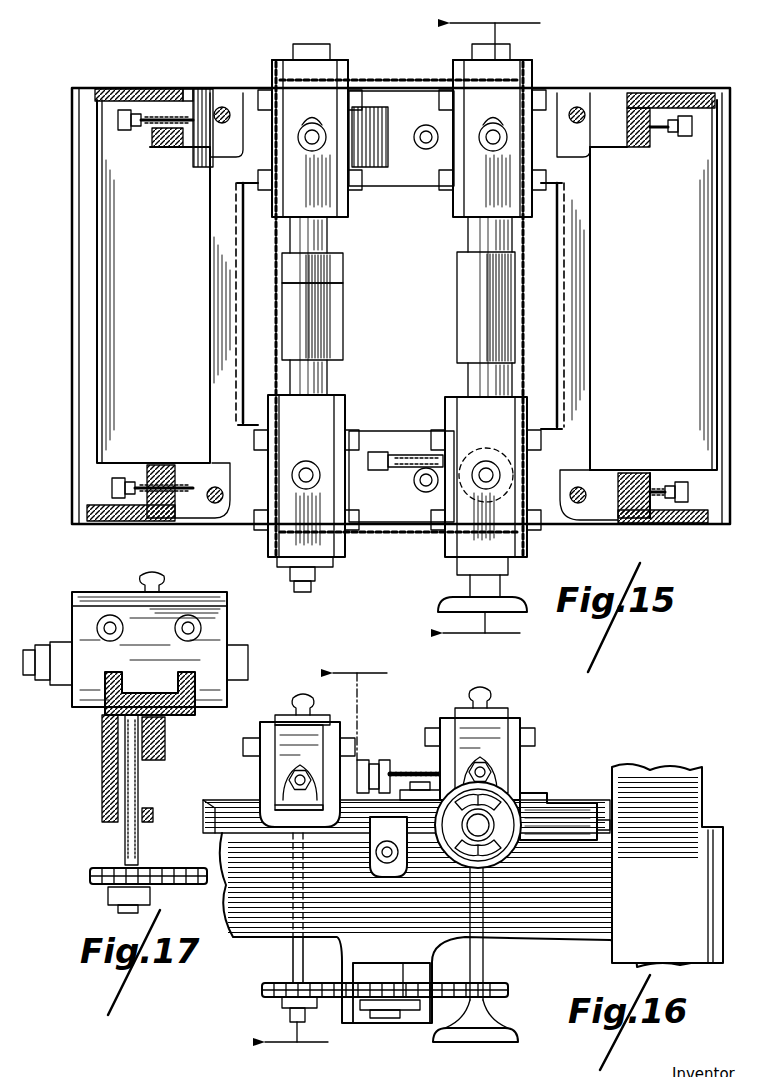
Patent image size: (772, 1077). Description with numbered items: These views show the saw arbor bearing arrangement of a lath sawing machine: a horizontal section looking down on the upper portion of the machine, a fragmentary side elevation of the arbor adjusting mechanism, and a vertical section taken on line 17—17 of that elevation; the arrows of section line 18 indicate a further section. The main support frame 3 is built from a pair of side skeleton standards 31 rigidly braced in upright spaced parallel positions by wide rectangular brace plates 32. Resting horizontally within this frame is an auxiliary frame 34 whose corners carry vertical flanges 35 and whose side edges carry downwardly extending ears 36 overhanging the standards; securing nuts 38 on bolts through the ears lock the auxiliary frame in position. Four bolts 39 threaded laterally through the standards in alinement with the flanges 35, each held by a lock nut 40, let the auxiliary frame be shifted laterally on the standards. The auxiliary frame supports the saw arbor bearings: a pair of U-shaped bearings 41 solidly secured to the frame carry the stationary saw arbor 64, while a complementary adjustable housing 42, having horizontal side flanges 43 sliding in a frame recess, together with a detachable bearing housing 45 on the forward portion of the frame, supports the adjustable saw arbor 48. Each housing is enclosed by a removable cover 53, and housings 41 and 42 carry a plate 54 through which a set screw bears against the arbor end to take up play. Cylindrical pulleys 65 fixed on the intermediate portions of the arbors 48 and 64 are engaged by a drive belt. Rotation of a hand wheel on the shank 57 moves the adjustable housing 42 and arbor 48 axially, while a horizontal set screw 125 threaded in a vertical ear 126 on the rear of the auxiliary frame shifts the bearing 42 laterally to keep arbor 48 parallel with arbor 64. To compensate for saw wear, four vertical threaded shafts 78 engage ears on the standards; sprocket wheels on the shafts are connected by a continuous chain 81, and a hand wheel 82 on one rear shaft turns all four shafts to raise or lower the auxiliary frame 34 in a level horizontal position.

In FIG. 15, the frame 3 is at (636, 150).
In FIG. 16, the section line 17 is at (340, 869).
In FIG. 15, the section line 18 is at (504, 338).
In FIG. 17, the side skeleton standard 31 is at (100, 782).
In FIG. 16, the side skeleton standard 31 is at (580, 922).
In FIG. 15, the brace plate 32 is at (86, 302).
In FIG. 16, the brace plate 32 is at (707, 840).
In FIG. 15, the auxiliary frame 34 is at (577, 400).
In FIG. 17, the auxiliary frame 34 is at (107, 712).
In FIG. 15, the vertical flange 35 is at (600, 478).
In FIG. 16, the ear 36 is at (377, 830).
In FIG. 16, the securing nut 38 is at (377, 880).
In FIG. 15, the bolt 39 is at (130, 131).
In FIG. 15, the lock nut 40 is at (657, 477).
In FIG. 15, the bearing 41 is at (340, 214).
In FIG. 17, the bearing 41 is at (202, 650).
In FIG. 16, the bearing 41 is at (270, 740).
In FIG. 15, the complementary housing 42 is at (458, 417).
In FIG. 16, the complementary housing 42 is at (523, 767).
In FIG. 16, the horizontal side flange 43 is at (537, 800).
In FIG. 15, the detachable bearing housing 45 is at (460, 197).
In FIG. 15, the saw arbor 48 is at (472, 378).
In FIG. 15, the removable cover 53 is at (318, 76).
In FIG. 17, the removable cover 53 is at (165, 598).
In FIG. 16, the plate 54 is at (287, 797).
In FIG. 16, the shank 57 is at (390, 883).
In FIG. 15, the saw arbor 64 is at (322, 263).
In FIG. 17, the saw arbor 64 is at (240, 658).
In FIG. 15, the cylindrical pulley 65 is at (323, 328).
In FIG. 17, the cylindrical pulley 65 is at (33, 650).
In FIG. 17, the shaft 78 is at (125, 835).
In FIG. 16, the shaft 78 is at (297, 957).
In FIG. 15, the chain 81 is at (523, 370).
In FIG. 17, the chain 81 is at (163, 866).
In FIG. 16, the chain 81 is at (481, 983).
In FIG. 16, the hand wheel 82 is at (437, 1035).
In FIG. 16, the set screw 125 is at (407, 763).
In FIG. 16, the vertical ear 126 is at (372, 762).